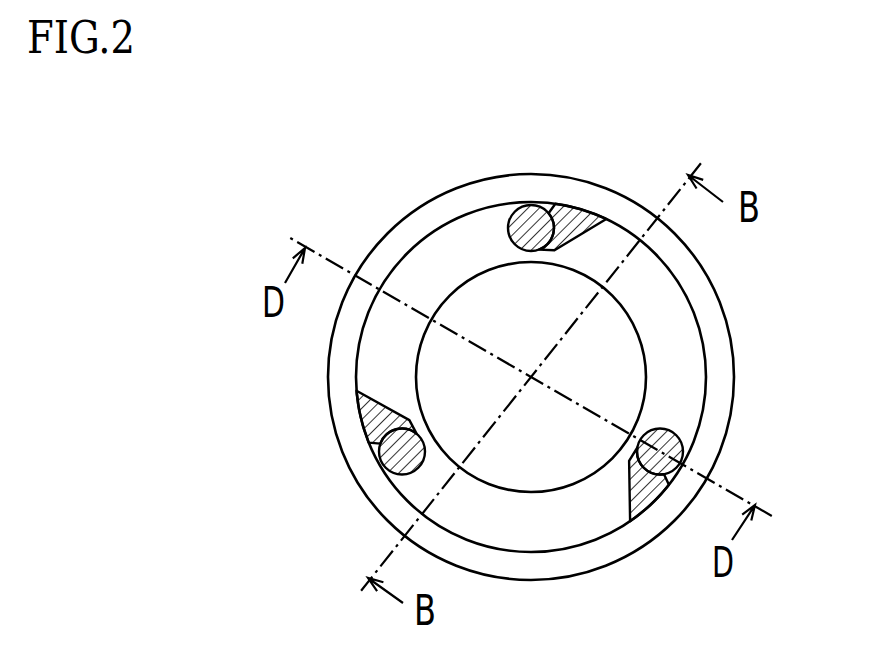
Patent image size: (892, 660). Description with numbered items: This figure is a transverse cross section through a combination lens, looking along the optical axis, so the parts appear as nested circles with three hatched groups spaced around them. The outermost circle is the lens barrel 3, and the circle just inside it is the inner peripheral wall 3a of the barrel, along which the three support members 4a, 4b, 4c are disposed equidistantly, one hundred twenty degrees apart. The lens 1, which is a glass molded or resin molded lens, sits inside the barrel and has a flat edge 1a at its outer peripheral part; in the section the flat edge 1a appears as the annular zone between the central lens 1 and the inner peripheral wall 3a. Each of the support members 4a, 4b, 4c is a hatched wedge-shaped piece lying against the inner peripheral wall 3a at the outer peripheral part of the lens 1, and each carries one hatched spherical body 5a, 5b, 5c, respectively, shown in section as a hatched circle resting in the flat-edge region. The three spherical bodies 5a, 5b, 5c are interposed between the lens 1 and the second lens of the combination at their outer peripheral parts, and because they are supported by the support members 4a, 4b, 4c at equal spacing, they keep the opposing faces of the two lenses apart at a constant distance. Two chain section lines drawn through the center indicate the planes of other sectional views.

The lens 1 is at (465, 302).
The flat edge 1a is at (453, 242).
The lens barrel 3 is at (340, 386).
The inner peripheral wall 3a is at (687, 308).
The support member 4a is at (647, 513).
The support member 4b is at (576, 208).
The support member 4c is at (368, 423).
The spherical body 5a is at (681, 442).
The spherical body 5b is at (532, 207).
The spherical body 5c is at (384, 468).